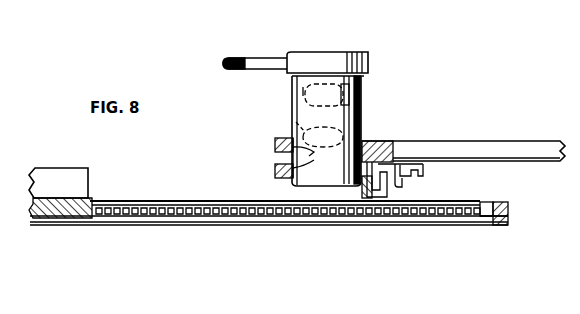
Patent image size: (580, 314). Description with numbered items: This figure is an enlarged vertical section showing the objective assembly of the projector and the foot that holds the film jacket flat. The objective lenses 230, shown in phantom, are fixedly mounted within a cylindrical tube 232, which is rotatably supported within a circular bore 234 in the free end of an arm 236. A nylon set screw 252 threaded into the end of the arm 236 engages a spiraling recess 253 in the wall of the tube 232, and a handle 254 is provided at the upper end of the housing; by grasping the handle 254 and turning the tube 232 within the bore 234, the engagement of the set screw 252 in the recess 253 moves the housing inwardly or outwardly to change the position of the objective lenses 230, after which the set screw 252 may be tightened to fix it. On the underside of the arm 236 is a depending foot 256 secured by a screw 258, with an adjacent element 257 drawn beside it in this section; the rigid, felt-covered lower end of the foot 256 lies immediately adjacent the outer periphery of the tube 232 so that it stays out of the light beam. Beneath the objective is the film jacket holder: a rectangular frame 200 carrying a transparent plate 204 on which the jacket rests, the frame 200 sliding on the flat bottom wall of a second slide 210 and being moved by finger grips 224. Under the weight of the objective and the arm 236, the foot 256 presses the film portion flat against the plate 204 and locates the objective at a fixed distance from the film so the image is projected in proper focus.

The frame 200 is at (500, 202).
The transparent plate 204 is at (402, 217).
The second slide 210 is at (480, 225).
The finger grips 224 is at (67, 168).
The objective lenses 230 is at (303, 91).
The cylindrical tube 232 is at (361, 112).
The bore 234 is at (298, 115).
The arm 236 is at (500, 141).
The set screw 252 is at (275, 157).
The recess 253 is at (291, 134).
The handle 254 is at (236, 58).
The foot 256 is at (396, 165).
The hook clip 257 is at (362, 200).
The screw 258 is at (423, 170).